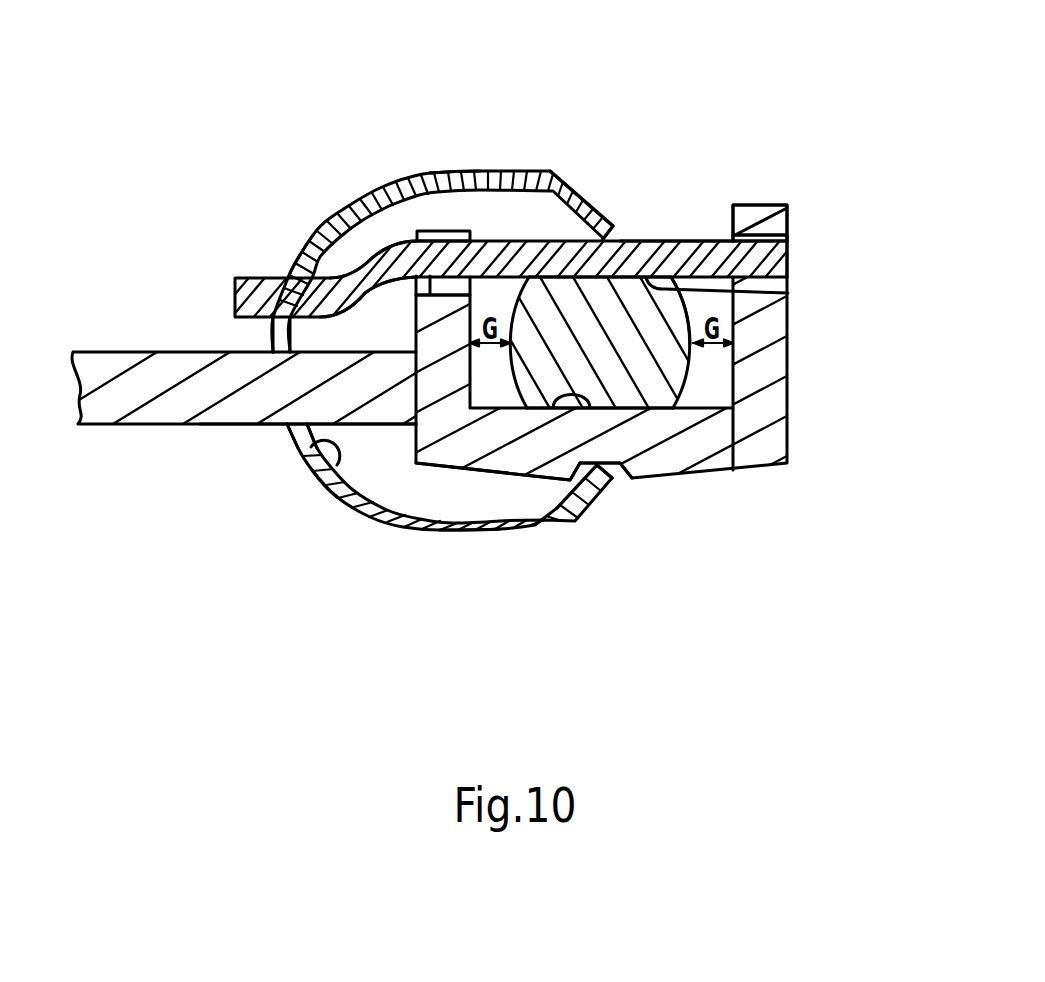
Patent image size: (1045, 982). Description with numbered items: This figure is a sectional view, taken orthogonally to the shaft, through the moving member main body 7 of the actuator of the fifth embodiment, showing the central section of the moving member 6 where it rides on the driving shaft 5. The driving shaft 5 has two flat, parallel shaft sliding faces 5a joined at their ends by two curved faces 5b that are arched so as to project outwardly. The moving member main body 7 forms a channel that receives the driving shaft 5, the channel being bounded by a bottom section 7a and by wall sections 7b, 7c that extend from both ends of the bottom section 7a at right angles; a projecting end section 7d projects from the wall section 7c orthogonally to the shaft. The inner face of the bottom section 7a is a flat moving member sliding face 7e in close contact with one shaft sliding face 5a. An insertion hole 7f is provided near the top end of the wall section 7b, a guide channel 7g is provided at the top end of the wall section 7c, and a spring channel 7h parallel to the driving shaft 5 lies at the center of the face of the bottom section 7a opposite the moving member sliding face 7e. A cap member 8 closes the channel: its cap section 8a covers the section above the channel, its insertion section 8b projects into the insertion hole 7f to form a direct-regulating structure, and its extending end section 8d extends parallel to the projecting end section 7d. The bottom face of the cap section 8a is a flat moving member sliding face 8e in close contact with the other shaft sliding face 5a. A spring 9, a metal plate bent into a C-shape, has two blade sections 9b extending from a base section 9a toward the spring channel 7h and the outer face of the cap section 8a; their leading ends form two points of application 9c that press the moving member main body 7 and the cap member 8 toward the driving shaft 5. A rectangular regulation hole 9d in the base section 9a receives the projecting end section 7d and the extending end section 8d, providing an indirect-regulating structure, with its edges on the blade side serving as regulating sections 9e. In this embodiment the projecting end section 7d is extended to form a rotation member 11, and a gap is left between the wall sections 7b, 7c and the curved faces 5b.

The driving shaft 5 is at (706, 358).
The shaft sliding face 5a is at (624, 241).
The curved face 5b is at (535, 277).
The moving member 6 is at (320, 178).
The moving member main body 7 is at (792, 440).
The bottom section 7a is at (729, 468).
The wall section 7b is at (764, 205).
The wall section 7c is at (472, 236).
The projecting end section 7d is at (257, 425).
The moving member sliding face 7e is at (555, 484).
The insertion hole 7f is at (788, 240).
The guide channel 7g is at (328, 218).
The spring channel 7h is at (621, 475).
The cap member 8 is at (557, 230).
The cap section 8a is at (663, 241).
The insertion section 8b is at (788, 260).
The extending end section 8d is at (276, 278).
The moving member sliding face 8e is at (788, 293).
The spring 9 is at (400, 173).
The base section 9a is at (273, 343).
The blade section 9b is at (451, 171).
The point of application 9c is at (613, 227).
The regulation hole 9d is at (290, 437).
The regulating section 9e is at (294, 263).
The rotation member 11 is at (115, 425).